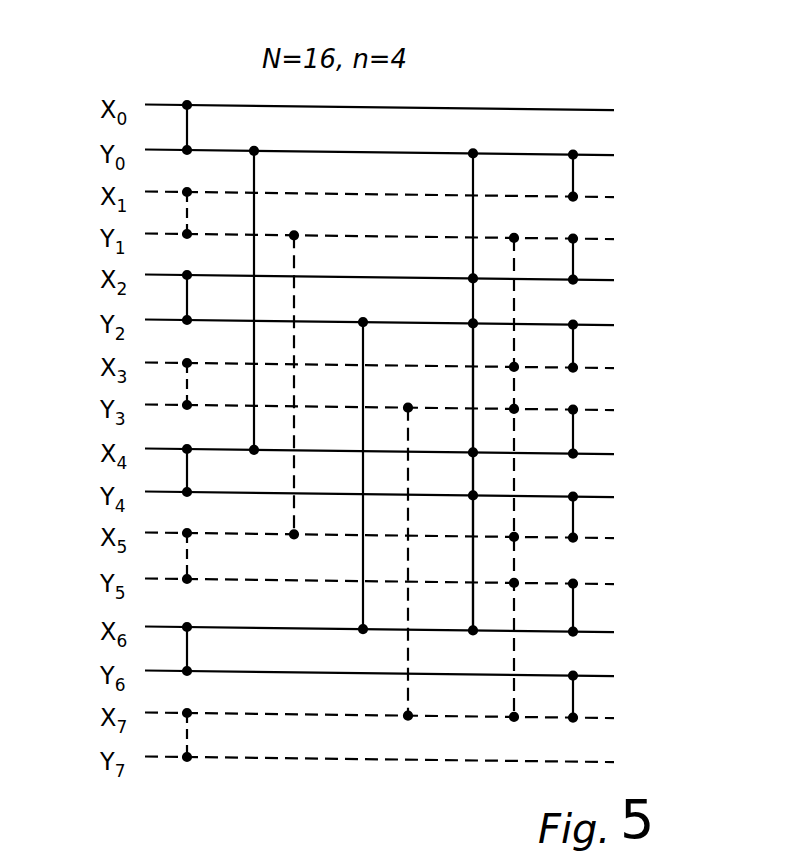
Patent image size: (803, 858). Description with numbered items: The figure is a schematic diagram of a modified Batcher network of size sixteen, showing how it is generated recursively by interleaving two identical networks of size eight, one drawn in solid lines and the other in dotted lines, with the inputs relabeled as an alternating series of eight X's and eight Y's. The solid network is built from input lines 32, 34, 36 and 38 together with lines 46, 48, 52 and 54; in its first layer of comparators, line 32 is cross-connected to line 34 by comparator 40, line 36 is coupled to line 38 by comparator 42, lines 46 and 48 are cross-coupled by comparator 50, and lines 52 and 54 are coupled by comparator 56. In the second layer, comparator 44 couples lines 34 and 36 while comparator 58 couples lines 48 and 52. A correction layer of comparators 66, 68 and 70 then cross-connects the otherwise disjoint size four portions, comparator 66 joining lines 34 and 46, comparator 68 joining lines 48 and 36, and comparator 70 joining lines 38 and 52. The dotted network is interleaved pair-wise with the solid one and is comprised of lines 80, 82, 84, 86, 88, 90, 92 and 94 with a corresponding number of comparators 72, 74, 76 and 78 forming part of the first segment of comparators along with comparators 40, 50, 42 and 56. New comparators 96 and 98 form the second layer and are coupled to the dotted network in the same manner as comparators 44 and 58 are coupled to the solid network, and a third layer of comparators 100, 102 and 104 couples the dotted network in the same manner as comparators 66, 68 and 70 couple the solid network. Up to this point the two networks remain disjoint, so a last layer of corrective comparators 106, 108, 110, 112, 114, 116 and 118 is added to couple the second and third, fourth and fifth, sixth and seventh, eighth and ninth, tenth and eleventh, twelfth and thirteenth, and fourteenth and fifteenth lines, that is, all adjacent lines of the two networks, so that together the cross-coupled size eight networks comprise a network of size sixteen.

The input line 32 is at (160, 104).
The input line 34 is at (600, 153).
The input line 36 is at (310, 454).
The input line 38 is at (225, 495).
The comparator 40 is at (188, 124).
The comparator 42 is at (187, 470).
The comparator 44 is at (256, 173).
The line 46 is at (312, 279).
The line 48 is at (400, 324).
The comparator 50 is at (187, 296).
The line 52 is at (224, 629).
The line 54 is at (224, 673).
The comparator 56 is at (187, 645).
The comparator 58 is at (363, 607).
The correction comparator 66 is at (474, 176).
The correction comparator 68 is at (473, 357).
The correction comparator 70 is at (473, 525).
The comparator 72 is at (187, 204).
The comparator 74 is at (187, 383).
The comparator 76 is at (187, 555).
The comparator 78 is at (187, 733).
The line 80 is at (404, 195).
The line 82 is at (383, 238).
The line 84 is at (385, 368).
The line 86 is at (456, 411).
The line 88 is at (218, 535).
The line 90 is at (222, 581).
The line 92 is at (216, 714).
The line 94 is at (232, 759).
The comparator 96 is at (300, 258).
The comparator 98 is at (408, 690).
The comparator 100 is at (517, 258).
The comparator 102 is at (517, 440).
The comparator 104 is at (515, 616).
The corrective comparator 106 is at (573, 176).
The corrective comparator 108 is at (573, 259).
The corrective comparator 110 is at (573, 346).
The corrective comparator 112 is at (573, 432).
The corrective comparator 114 is at (573, 517).
The corrective comparator 116 is at (573, 608).
The corrective comparator 118 is at (573, 697).